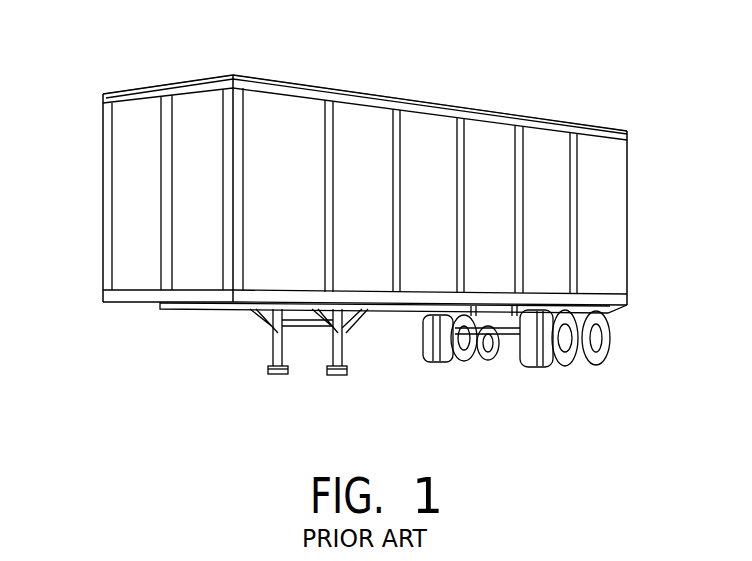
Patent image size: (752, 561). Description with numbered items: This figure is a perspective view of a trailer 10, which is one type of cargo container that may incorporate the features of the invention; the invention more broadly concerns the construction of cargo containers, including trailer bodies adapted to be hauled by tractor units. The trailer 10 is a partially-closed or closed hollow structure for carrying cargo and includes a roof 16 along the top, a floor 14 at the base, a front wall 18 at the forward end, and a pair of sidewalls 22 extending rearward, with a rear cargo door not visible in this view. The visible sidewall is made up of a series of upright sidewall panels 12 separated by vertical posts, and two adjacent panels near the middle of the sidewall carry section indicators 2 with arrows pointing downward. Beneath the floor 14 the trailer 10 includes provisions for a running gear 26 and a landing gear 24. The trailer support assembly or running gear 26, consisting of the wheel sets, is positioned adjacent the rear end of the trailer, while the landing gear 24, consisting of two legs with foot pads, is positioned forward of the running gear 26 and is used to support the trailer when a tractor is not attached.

The trailer 10 is at (520, 88).
The side wall panels 12 is at (126, 196).
The floor 14 is at (137, 303).
The roof 16 is at (170, 84).
The front wall 18 is at (127, 143).
The sidewalls 22 is at (610, 172).
The landing gear 24 is at (340, 375).
The running gear 26 is at (503, 400).
The section line for FIG. 2 is at (492, 212).